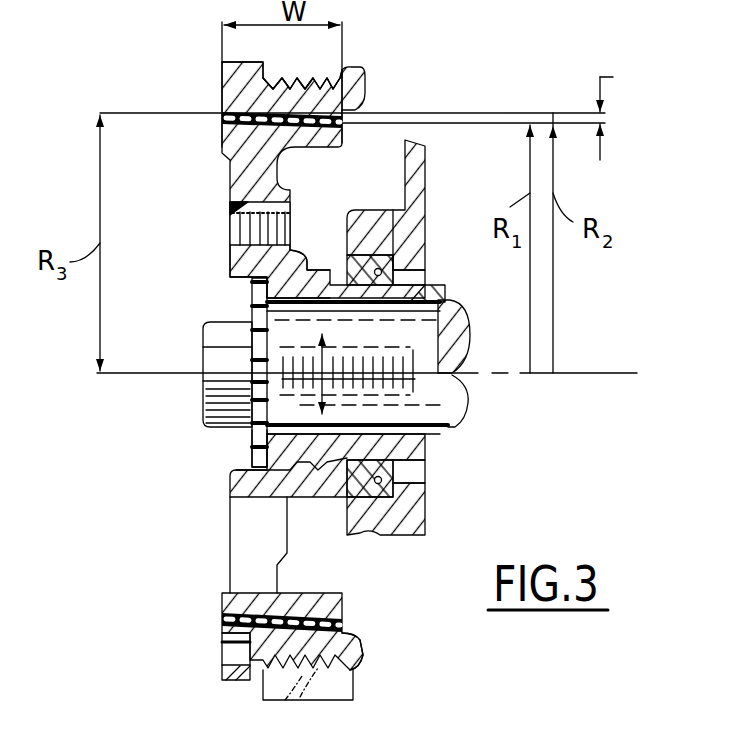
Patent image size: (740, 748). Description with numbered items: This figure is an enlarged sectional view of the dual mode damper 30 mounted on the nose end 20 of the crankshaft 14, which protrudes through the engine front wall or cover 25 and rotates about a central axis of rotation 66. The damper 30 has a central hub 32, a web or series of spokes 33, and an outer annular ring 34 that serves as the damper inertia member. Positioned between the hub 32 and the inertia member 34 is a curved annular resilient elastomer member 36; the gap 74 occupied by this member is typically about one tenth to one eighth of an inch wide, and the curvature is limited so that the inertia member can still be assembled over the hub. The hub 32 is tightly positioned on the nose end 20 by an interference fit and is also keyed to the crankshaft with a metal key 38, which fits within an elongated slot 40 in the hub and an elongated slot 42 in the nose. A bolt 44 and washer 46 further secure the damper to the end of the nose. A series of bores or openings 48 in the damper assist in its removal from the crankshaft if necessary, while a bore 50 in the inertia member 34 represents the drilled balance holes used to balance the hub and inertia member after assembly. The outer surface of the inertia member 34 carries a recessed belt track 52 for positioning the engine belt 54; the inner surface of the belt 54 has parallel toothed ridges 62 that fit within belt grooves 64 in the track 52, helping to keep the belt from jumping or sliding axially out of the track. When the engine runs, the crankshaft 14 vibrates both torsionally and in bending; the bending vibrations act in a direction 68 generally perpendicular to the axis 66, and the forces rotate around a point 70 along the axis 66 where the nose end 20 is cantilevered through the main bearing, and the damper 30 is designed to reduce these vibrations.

The crankshaft 14 is at (466, 418).
The end of the crankshaft 20 is at (455, 428).
The front wall or cover 25 is at (420, 178).
The damper 30 is at (228, 478).
The central hub 32 is at (233, 273).
The web or series of spokes 33 is at (230, 170).
The outer annular ring 34 is at (222, 83).
The annular resilient elastomer member 36 is at (222, 118).
The metal key 38 is at (435, 293).
The elongated slot 40 is at (252, 305).
The elongated slot 42 is at (466, 331).
The bolt 44 is at (203, 358).
The washer 46 is at (252, 441).
The bores or openings 48 is at (230, 232).
The bore 50 is at (222, 650).
The recessed belt track 52 is at (265, 73).
The engine belt 54 is at (353, 700).
The toothed ridges 62 is at (292, 668).
The belt grooves 64 is at (325, 663).
The central axis of rotation 66 is at (612, 373).
The direction of bending vibrations 68 is at (328, 360).
The point 70 is at (468, 396).
The gap 74 is at (625, 111).